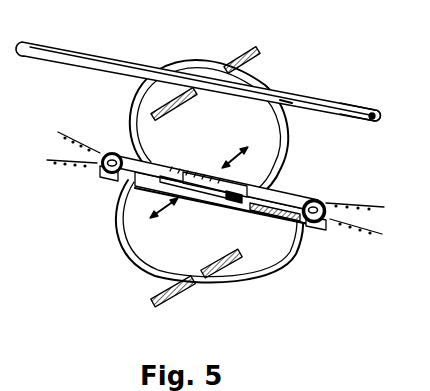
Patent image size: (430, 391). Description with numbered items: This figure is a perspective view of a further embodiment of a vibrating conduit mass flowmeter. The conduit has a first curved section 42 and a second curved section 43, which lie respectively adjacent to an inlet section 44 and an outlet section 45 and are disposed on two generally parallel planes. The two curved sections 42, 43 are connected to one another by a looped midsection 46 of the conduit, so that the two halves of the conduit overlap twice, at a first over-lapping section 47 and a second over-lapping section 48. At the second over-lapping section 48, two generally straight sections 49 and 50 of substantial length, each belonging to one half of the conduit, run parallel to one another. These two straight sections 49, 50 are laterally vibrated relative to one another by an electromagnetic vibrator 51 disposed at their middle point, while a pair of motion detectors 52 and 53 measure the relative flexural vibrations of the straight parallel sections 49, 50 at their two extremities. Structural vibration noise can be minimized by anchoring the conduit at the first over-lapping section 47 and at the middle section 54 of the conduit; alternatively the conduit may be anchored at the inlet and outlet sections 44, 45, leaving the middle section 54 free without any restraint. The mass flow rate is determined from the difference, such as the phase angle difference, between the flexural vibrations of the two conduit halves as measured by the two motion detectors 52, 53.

The first curved section 42 is at (290, 160).
The second curved section 43 is at (132, 98).
The inlet section 44 is at (93, 60).
The outlet section 45 is at (333, 103).
The looped midsection 46 is at (116, 232).
The first over-lapping section 47 is at (221, 78).
The second over-lapping section 48 is at (229, 196).
The generally straight section 49 is at (250, 192).
The generally straight section 50 is at (255, 162).
The electromagnetic vibrator 51 is at (207, 158).
The motion detector 52 is at (108, 172).
The motion detector 53 is at (318, 223).
The middle section 54 is at (210, 284).